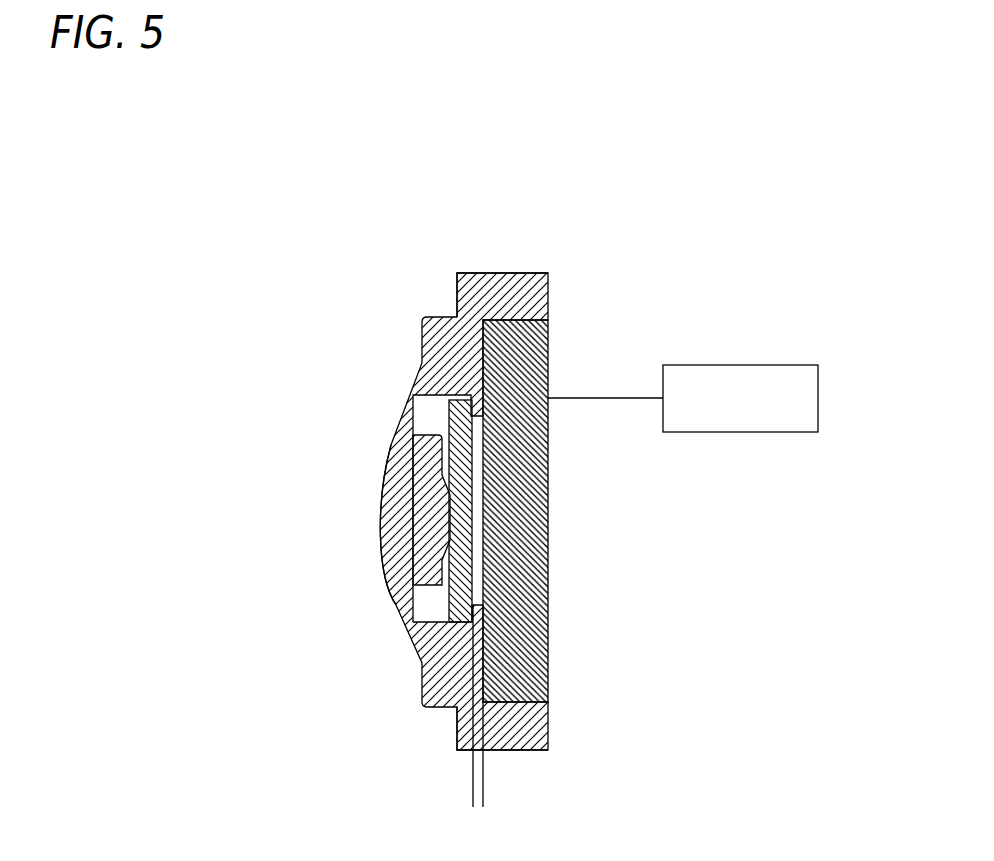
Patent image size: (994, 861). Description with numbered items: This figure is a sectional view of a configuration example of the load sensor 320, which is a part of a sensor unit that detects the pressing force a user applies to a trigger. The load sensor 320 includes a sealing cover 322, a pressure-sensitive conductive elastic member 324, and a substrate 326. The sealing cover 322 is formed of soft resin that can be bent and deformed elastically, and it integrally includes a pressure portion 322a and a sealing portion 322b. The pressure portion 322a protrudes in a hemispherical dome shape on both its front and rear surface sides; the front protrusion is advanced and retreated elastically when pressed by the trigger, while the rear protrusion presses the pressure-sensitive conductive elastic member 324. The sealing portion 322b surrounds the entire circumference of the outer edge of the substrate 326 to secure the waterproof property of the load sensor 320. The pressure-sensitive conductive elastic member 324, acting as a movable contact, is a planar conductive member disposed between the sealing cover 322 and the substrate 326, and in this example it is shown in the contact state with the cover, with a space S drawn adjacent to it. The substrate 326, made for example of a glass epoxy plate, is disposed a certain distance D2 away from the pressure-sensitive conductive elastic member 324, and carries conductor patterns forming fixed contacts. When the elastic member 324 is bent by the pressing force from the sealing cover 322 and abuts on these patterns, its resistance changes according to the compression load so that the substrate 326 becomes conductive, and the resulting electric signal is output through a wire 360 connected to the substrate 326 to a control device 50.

The load sensor 320 is at (612, 236).
The sealing cover 322 is at (360, 437).
The pressure portion 322a is at (382, 533).
The sealing portion 322b is at (457, 292).
The pressure-sensitive conductive elastic member 324 is at (472, 541).
The substrate 326 is at (548, 642).
The wire 360 is at (603, 398).
The control device 50 is at (765, 365).
The space S is at (410, 603).
The distance D2 is at (523, 787).